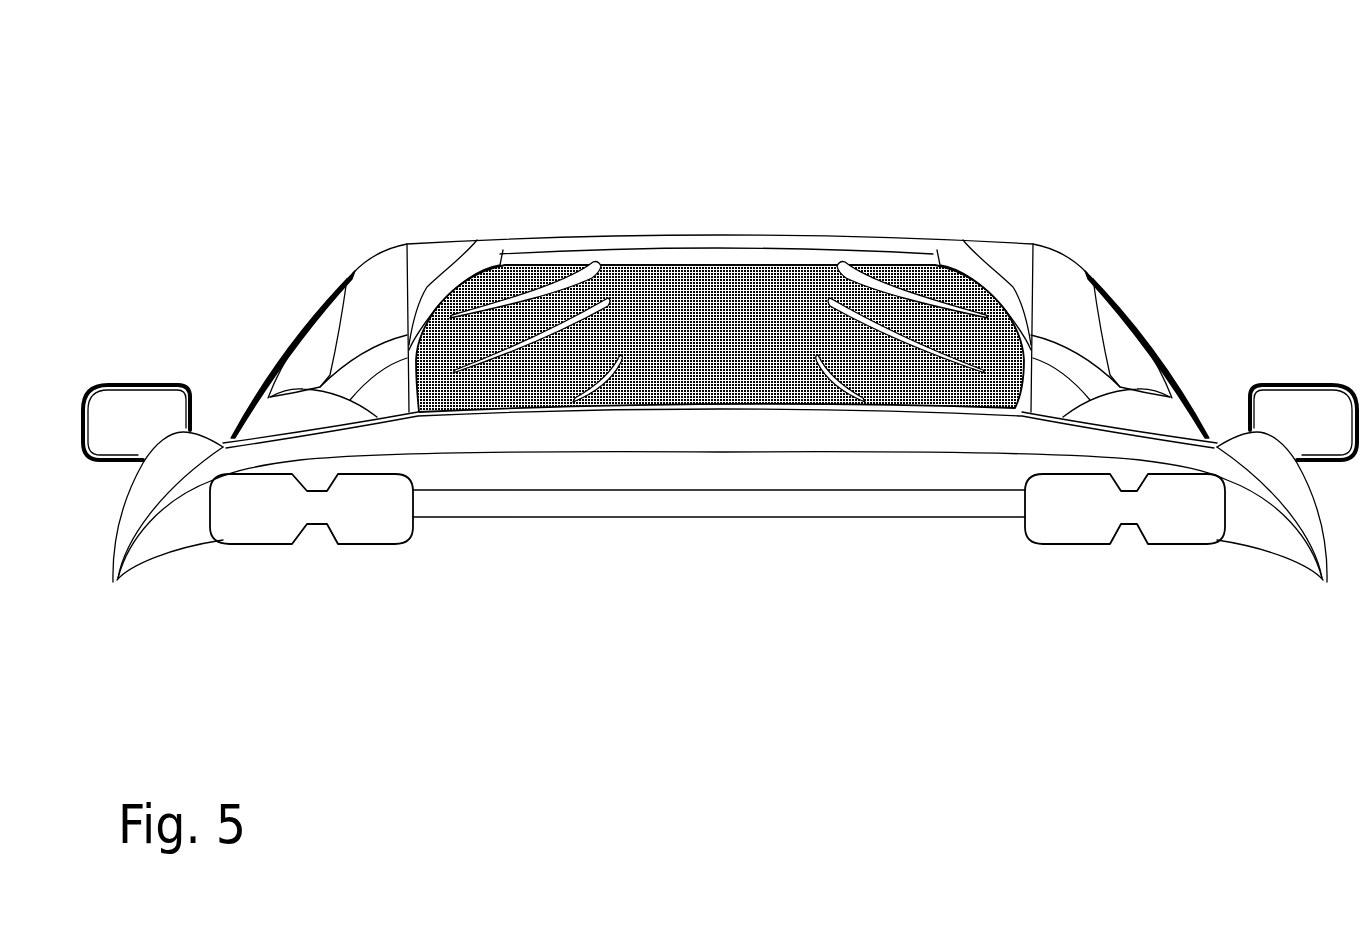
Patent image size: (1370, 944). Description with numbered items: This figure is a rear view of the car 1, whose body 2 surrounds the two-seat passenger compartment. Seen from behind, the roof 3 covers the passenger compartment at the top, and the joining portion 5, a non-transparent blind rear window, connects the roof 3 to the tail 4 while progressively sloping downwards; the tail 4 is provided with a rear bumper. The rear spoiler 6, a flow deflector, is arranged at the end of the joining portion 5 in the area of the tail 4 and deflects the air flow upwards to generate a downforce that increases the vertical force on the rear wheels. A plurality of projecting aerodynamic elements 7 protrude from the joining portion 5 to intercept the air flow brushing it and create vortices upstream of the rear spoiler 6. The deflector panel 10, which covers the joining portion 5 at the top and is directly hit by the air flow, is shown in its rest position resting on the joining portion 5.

The car 1 is at (1220, 733).
The body 2 is at (1098, 101).
The roof 3 is at (708, 240).
The tail 4 is at (713, 527).
The joining portion 5 is at (769, 300).
The rear spoiler 6 is at (497, 427).
The projecting aerodynamic elements 7 is at (585, 262).
The deflector panel 10 is at (664, 328).